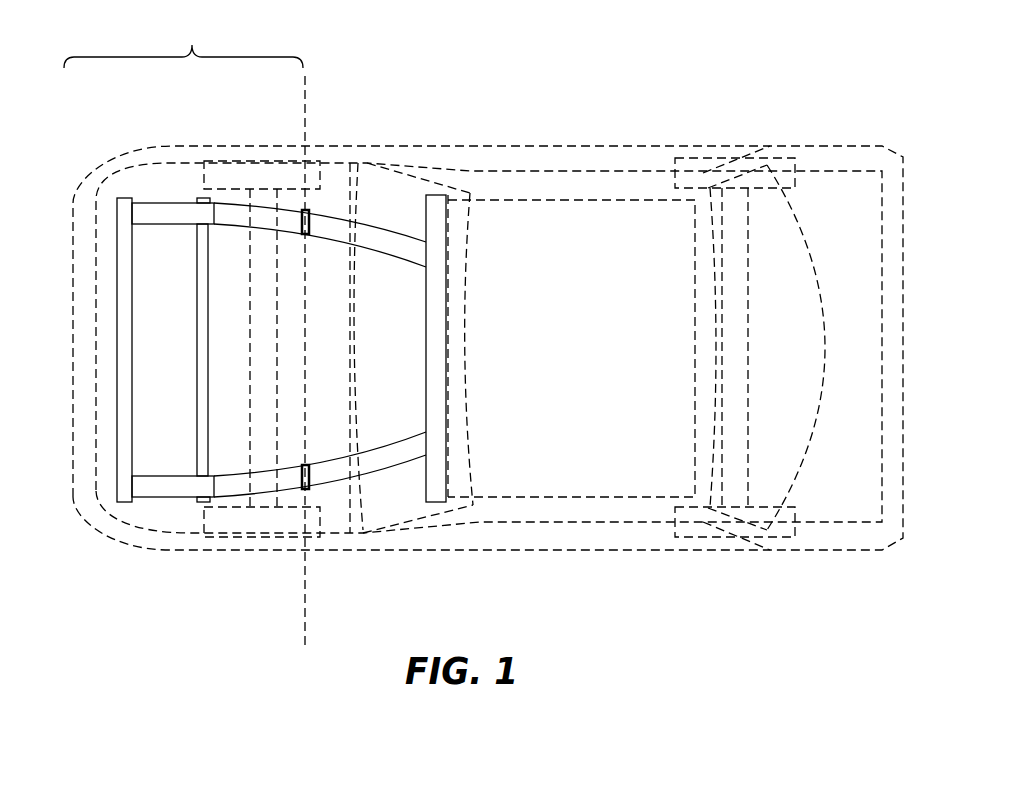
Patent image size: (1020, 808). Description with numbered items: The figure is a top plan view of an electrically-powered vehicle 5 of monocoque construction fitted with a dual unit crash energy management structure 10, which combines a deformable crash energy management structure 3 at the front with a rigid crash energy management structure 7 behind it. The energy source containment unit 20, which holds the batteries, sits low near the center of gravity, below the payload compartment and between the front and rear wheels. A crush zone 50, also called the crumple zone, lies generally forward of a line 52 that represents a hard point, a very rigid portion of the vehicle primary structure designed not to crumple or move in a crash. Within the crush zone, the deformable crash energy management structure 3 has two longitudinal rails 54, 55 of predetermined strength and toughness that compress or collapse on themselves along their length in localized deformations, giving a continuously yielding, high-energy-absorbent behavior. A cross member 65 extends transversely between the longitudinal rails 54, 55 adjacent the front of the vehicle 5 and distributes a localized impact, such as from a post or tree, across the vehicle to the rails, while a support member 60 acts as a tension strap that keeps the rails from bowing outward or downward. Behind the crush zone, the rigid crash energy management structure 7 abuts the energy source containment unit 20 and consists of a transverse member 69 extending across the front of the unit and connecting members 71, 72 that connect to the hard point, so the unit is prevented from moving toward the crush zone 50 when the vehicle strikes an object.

The deformable crash energy management structure 3 is at (189, 510).
The vehicle 5 is at (716, 124).
The rigid crash energy management structure 7 is at (387, 492).
The crash energy management structure 10 is at (319, 335).
The energy source containment unit 20 is at (535, 198).
The crush zone 50 is at (183, 41).
The line 52 is at (305, 107).
The longitudinal rail 54 is at (177, 203).
The longitudinal rail 55 is at (183, 473).
The support member 60 is at (193, 260).
The cross member 65 is at (132, 342).
The transverse member 69 is at (447, 297).
The connecting member 71 is at (378, 226).
The connecting member 72 is at (374, 449).